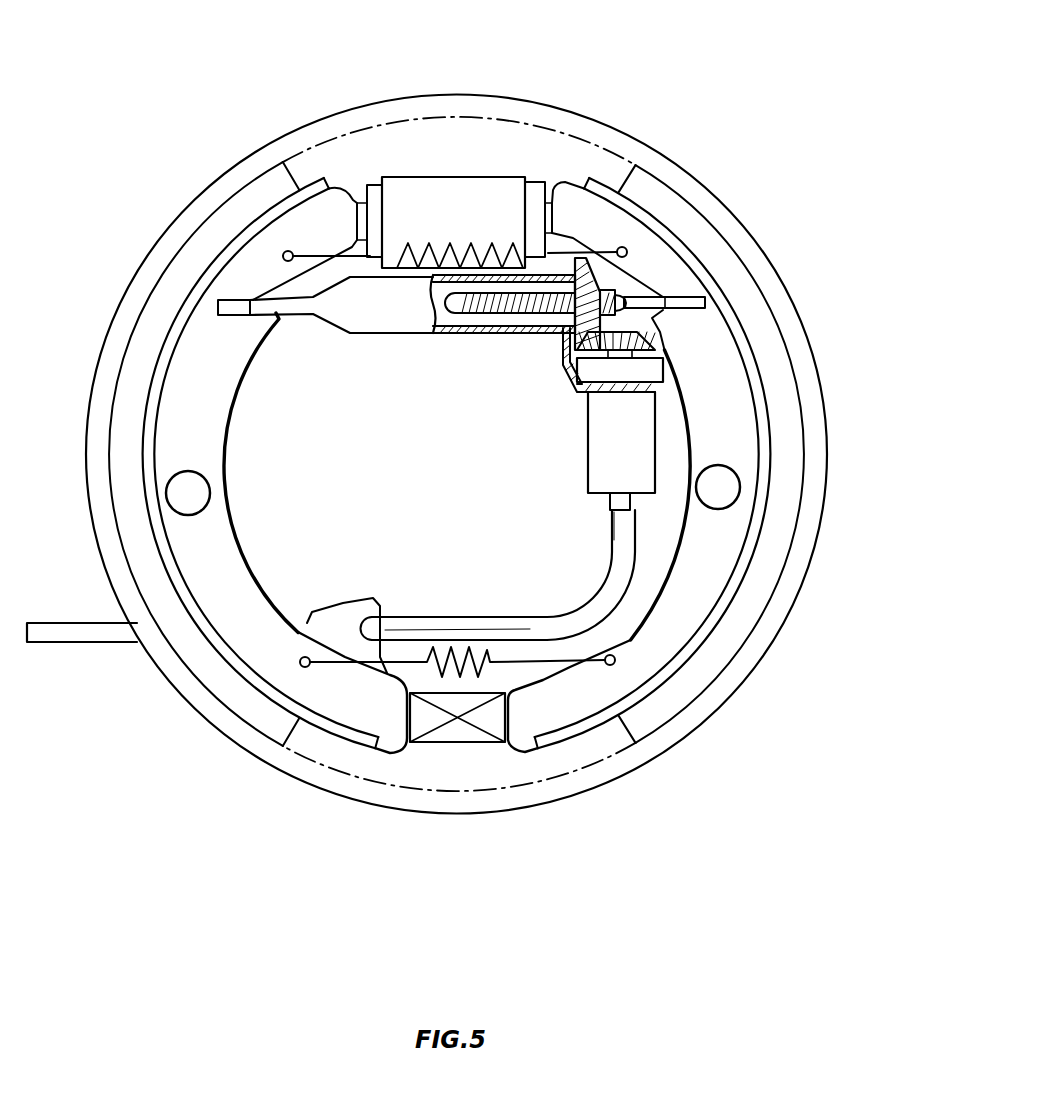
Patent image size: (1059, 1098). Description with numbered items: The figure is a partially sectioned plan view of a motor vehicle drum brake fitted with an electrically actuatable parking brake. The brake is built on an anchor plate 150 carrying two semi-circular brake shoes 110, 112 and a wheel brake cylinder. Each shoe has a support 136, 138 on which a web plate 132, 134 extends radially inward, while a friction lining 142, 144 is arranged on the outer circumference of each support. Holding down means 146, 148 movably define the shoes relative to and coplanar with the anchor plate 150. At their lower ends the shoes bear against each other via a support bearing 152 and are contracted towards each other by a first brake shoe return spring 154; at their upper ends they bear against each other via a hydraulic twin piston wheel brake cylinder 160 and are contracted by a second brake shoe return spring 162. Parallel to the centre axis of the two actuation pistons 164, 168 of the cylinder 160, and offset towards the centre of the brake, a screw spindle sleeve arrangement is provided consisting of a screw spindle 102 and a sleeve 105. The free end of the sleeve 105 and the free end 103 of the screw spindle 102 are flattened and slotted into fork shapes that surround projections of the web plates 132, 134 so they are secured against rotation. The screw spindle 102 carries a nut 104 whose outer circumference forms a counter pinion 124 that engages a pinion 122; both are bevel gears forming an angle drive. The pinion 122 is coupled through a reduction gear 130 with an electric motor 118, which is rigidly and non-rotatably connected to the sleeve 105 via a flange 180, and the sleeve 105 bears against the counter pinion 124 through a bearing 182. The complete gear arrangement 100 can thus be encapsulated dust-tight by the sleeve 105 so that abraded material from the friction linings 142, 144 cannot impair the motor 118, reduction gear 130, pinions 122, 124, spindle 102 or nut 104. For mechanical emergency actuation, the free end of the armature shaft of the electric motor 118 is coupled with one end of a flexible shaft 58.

The flexible shaft 58 is at (613, 545).
The gear arrangement 100 is at (545, 362).
The screw spindle 102 is at (480, 325).
The free end of the screw spindle 103 is at (683, 291).
The nut 104 is at (527, 320).
The sleeve 105 is at (368, 317).
The brake shoe 110 is at (237, 437).
The brake shoe 112 is at (678, 557).
The electric motor 118 is at (640, 437).
The pinion 122 is at (643, 343).
The counter pinion 124 is at (596, 285).
The reduction gear 130 is at (655, 370).
The web plate 132 is at (263, 623).
The web plate 134 is at (640, 640).
The support 136 is at (190, 607).
The support 138 is at (740, 580).
The friction lining 142 is at (210, 238).
The friction lining 144 is at (740, 613).
The holding down means 146 is at (190, 493).
The holding down means 148 is at (727, 487).
The anchor plate 150 is at (470, 549).
The support bearing 152 is at (462, 732).
The first brake shoe return spring 154 is at (510, 663).
The twin piston wheel brake cylinder 160 is at (500, 200).
The second brake shoe return spring 162 is at (440, 245).
The actuation piston 164 is at (367, 205).
The actuation piston 168 is at (548, 215).
The flange 180 is at (563, 372).
The bearing 182 is at (578, 262).